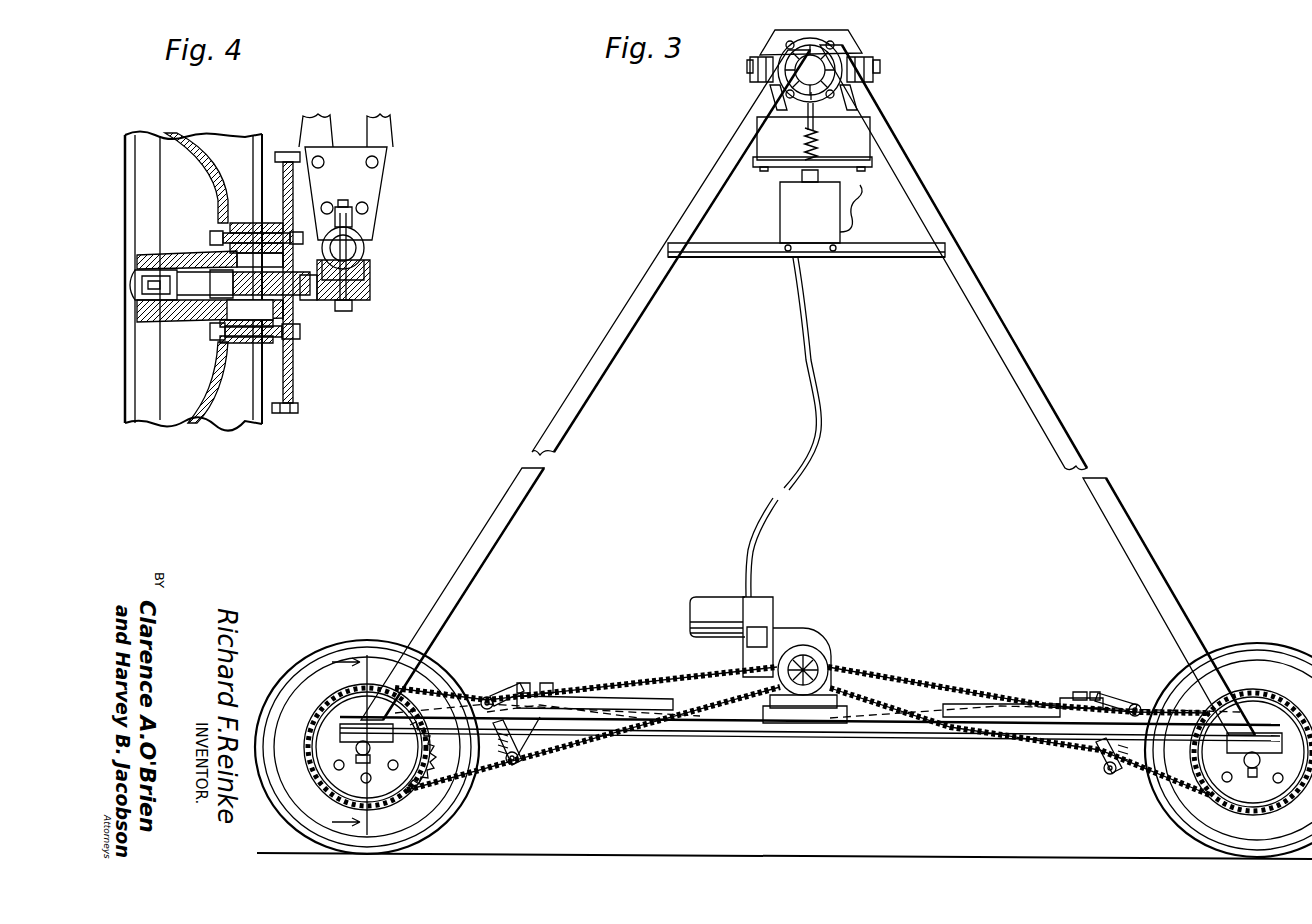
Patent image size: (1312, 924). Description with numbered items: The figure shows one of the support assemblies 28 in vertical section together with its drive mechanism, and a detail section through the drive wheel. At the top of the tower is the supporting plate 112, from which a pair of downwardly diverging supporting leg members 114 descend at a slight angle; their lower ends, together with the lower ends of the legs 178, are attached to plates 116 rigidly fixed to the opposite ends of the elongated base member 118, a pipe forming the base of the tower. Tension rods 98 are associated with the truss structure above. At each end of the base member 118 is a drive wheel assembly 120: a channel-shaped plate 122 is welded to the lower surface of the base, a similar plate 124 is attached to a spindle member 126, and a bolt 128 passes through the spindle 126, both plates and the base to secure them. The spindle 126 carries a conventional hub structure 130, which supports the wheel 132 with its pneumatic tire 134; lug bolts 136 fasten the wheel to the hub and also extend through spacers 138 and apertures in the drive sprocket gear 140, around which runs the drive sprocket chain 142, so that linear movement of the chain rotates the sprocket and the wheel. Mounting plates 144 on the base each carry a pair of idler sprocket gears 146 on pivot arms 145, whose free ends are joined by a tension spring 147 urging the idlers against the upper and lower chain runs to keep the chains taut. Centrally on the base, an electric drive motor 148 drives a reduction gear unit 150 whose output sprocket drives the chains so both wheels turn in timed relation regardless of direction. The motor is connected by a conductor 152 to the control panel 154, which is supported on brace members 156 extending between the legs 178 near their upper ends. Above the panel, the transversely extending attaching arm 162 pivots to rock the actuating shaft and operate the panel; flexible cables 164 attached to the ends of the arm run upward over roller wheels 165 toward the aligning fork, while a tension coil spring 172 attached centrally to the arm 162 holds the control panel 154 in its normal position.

In FIG. 3, the support assembly 28 is at (808, 390).
In FIG. 3, the tension rods 98 is at (857, 105).
In FIG. 3, the supporting plate 112 is at (836, 45).
In FIG. 4, the supporting leg members 114 is at (378, 125).
In FIG. 4, the plates 116 is at (373, 180).
In FIG. 3, the plates 116 is at (404, 660).
In FIG. 4, the base member 118 is at (368, 232).
In FIG. 3, the base member 118 is at (868, 725).
In FIG. 3, the drive wheel assembly 120 is at (378, 721).
In FIG. 4, the channel-shaped plate 122 is at (370, 260).
In FIG. 4, the plate 124 is at (372, 270).
In FIG. 4, the spindle member 126 is at (372, 292).
In FIG. 3, the spindle member 126 is at (1260, 720).
In FIG. 4, the bolt 128 is at (345, 312).
In FIG. 3, the bolt 128 is at (1228, 750).
In FIG. 4, the hub structure 130 is at (198, 302).
In FIG. 4, the wheel 132 is at (162, 132).
In FIG. 3, the wheel 132 is at (403, 762).
In FIG. 3, the pneumatic tire 134 is at (363, 640).
In FIG. 4, the lug bolts 136 is at (208, 238).
In FIG. 4, the spacers 138 is at (268, 343).
In FIG. 4, the drive sprocket gear 140 is at (287, 387).
In FIG. 3, the drive sprocket gear 140 is at (409, 754).
In FIG. 4, the drive sprocket chain 142 is at (292, 415).
In FIG. 3, the mounting plates 144 is at (618, 705).
In FIG. 3, the pivot arms 145 is at (1110, 697).
In FIG. 3, the idler sprocket gears 146 is at (487, 696).
In FIG. 3, the tension spring 147 is at (535, 750).
In FIG. 3, the electric drive motor 148 is at (716, 603).
In FIG. 3, the reduction gear unit 150 is at (785, 635).
In FIG. 3, the conductor 152 is at (817, 368).
In FIG. 3, the control panel 154 is at (790, 220).
In FIG. 3, the brace members 156 is at (874, 257).
In FIG. 3, the attaching arm 162 is at (938, 133).
In FIG. 3, the cables 164 is at (755, 140).
In FIG. 3, the roller wheels 165 is at (881, 68).
In FIG. 3, the tension coil spring 172 is at (806, 150).
In FIG. 4, the legs 178 is at (312, 128).
In FIG. 3, the legs 178 is at (590, 359).